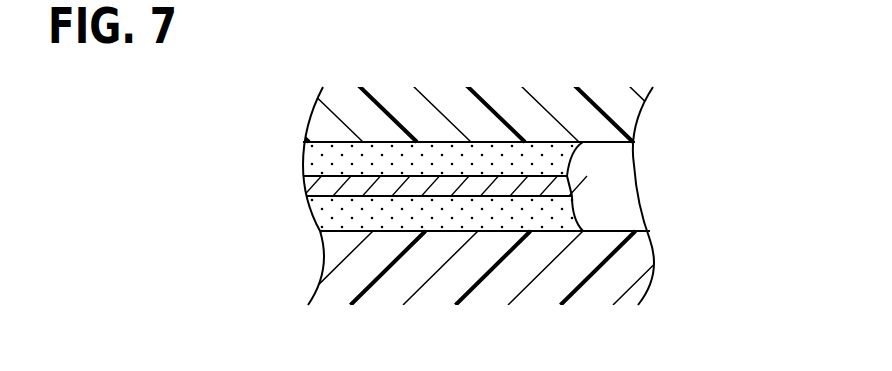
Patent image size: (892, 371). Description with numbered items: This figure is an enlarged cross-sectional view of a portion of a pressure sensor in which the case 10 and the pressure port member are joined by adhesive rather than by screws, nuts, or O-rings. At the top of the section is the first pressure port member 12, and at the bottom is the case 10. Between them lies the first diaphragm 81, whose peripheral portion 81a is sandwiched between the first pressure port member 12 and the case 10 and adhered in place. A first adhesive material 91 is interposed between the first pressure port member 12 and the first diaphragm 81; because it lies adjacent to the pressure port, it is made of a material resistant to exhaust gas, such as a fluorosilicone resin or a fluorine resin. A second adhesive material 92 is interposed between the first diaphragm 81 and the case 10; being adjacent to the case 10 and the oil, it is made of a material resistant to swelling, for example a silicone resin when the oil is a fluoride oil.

The first pressure port member 12 is at (627, 116).
The case 10 is at (623, 270).
The first adhesive material 91 is at (312, 158).
The second adhesive material 92 is at (315, 218).
The first diaphragm 81 is at (528, 190).
The peripheral portion 81a is at (567, 177).